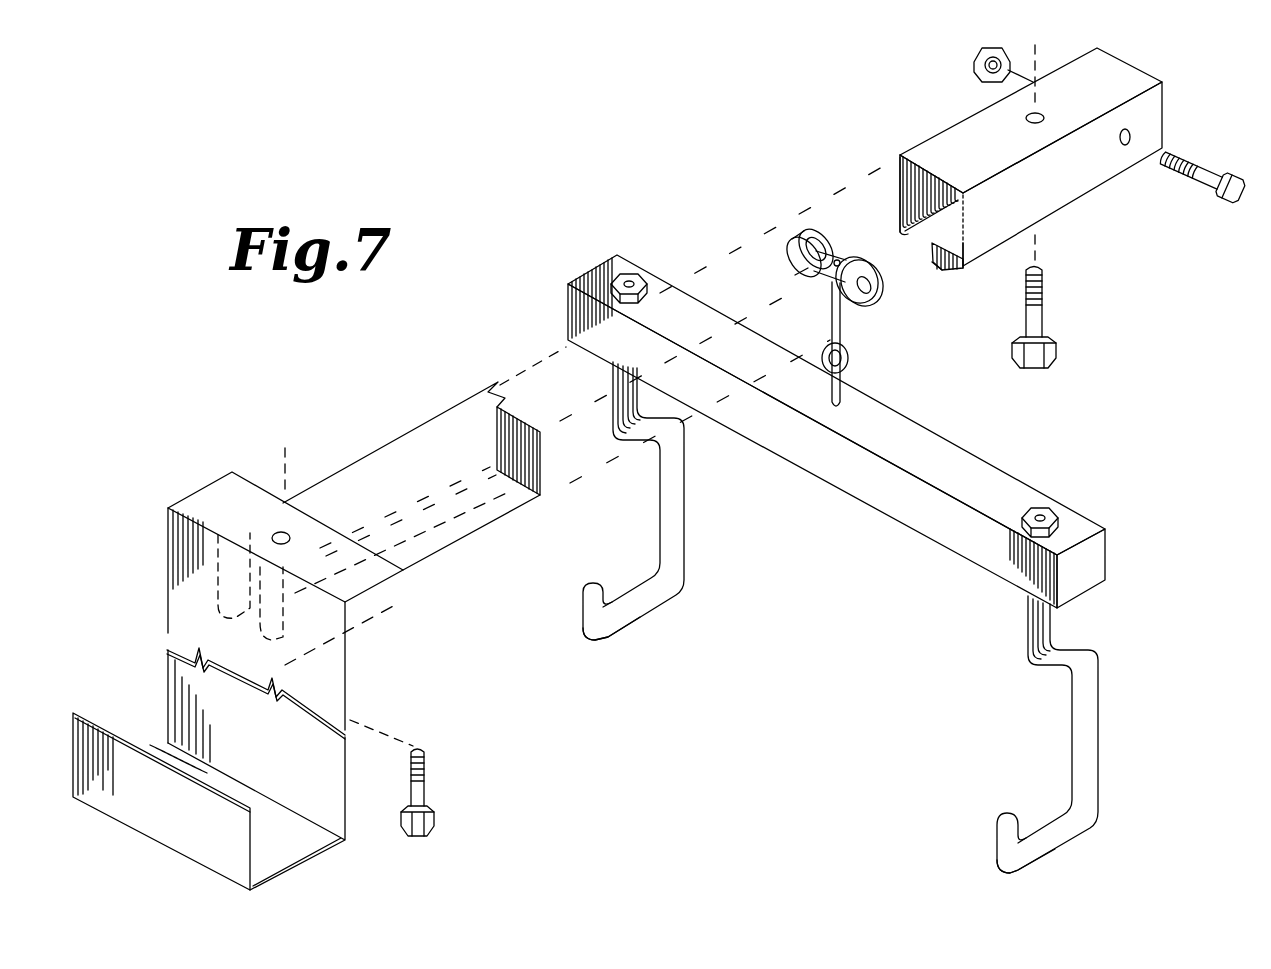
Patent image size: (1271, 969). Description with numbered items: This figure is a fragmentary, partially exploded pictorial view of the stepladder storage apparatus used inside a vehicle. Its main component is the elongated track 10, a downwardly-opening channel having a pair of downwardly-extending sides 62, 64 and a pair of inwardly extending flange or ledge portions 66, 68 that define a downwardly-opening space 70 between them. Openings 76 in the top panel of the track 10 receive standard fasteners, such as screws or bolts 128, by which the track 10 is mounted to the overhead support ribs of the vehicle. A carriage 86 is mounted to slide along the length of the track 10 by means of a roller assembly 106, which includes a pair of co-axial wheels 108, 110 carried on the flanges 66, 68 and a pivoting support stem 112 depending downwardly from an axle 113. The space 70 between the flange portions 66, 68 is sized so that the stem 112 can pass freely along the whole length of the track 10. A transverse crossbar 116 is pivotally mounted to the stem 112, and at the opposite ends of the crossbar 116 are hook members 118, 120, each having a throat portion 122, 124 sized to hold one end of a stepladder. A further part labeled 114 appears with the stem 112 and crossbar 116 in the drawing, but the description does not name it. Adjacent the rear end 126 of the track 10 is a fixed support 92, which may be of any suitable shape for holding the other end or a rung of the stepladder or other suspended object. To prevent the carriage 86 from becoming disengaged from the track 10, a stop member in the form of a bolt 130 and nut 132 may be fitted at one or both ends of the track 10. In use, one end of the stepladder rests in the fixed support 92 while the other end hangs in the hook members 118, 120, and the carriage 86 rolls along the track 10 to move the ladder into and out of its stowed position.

The track 10 is at (953, 120).
The side 62 is at (965, 243).
The side 64 is at (899, 192).
The flange or ledge portion 66 is at (933, 273).
The flange or ledge portion 68 is at (900, 230).
The space 70 is at (932, 240).
The opening 76 is at (1040, 122).
The carriage 86 is at (827, 299).
The fixed support 92 is at (163, 677).
The roller assembly 106 is at (810, 236).
The wheel 108 is at (860, 303).
The wheel 110 is at (792, 262).
The pivoting support stem 112 is at (848, 332).
The axle 113 is at (820, 275).
The retaining ring 114 is at (855, 375).
The transverse crossbar 116 is at (955, 460).
The hook member 118 is at (675, 548).
The hook member 120 is at (1083, 713).
The throat portion 122 is at (630, 614).
The throat portion 124 is at (1057, 838).
The rear end 126 is at (312, 502).
The bolt 128 is at (1033, 327).
The bolt 130 is at (1207, 175).
The nut 132 is at (973, 58).